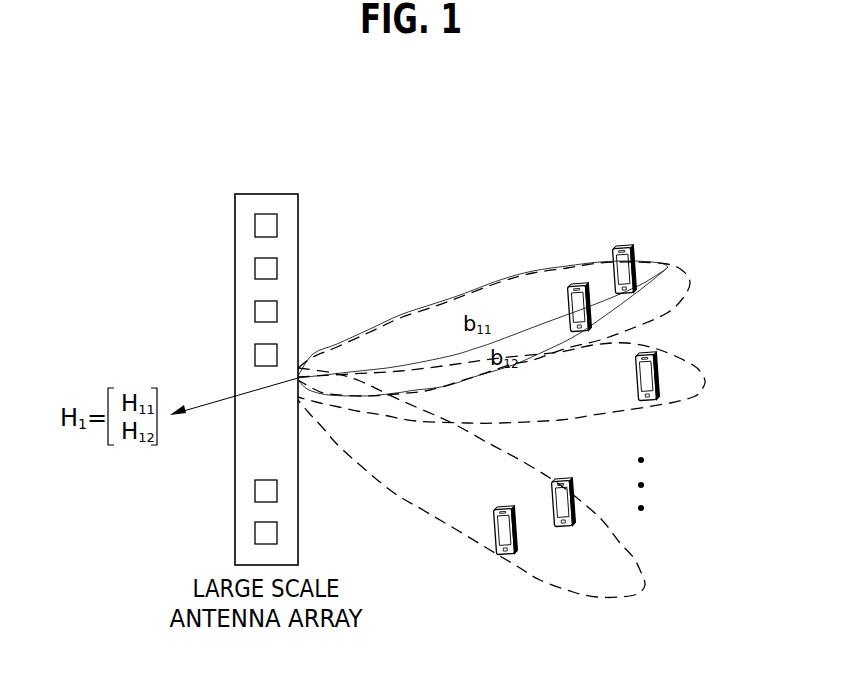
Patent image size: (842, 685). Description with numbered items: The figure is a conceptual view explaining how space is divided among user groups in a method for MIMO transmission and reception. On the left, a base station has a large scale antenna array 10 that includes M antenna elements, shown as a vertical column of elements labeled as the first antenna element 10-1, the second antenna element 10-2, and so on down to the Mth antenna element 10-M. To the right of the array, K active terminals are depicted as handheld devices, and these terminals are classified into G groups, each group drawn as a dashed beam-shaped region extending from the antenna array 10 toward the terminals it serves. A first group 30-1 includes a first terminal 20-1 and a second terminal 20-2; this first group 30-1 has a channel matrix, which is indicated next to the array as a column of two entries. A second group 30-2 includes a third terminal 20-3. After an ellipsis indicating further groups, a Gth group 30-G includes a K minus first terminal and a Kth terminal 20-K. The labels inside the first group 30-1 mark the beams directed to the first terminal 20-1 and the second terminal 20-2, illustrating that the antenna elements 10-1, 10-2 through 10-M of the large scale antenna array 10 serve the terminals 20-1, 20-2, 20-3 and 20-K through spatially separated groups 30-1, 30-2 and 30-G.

The large scale antenna array 10 is at (264, 194).
The antenna element 10-1 is at (255, 228).
The antenna element 10-2 is at (255, 270).
The antenna element 10-M is at (255, 533).
The first terminal 20-1 is at (622, 248).
The second terminal 20-2 is at (572, 285).
The third terminal 20-3 is at (646, 354).
The Kth terminal 20-K is at (500, 510).
The first group 30-1 is at (676, 267).
The second group 30-2 is at (677, 400).
The Gth group 30-G is at (575, 588).